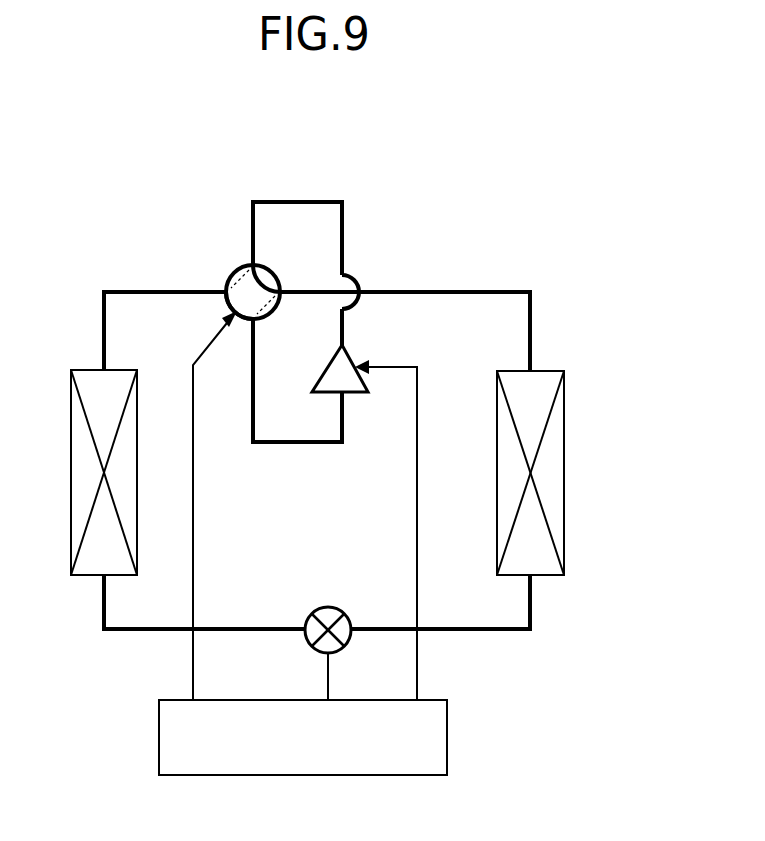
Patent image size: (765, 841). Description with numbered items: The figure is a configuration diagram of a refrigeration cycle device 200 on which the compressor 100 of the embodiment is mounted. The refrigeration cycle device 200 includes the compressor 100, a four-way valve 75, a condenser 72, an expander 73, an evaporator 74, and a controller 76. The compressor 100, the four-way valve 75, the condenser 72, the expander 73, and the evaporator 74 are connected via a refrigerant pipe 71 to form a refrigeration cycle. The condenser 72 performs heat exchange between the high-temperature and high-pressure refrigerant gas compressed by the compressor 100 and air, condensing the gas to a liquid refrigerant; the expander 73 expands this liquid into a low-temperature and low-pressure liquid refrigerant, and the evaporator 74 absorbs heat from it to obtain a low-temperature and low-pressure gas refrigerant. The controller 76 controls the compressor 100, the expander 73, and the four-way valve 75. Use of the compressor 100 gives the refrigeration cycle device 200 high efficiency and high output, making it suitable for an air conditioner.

The refrigeration cycle device 200 is at (327, 142).
The refrigerant pipe 71 is at (497, 290).
The condenser 72 is at (549, 370).
The expander 73 is at (328, 607).
The evaporator 74 is at (88, 368).
The four-way valve 75 is at (228, 273).
The controller 76 is at (250, 699).
The compressor 100 is at (353, 353).